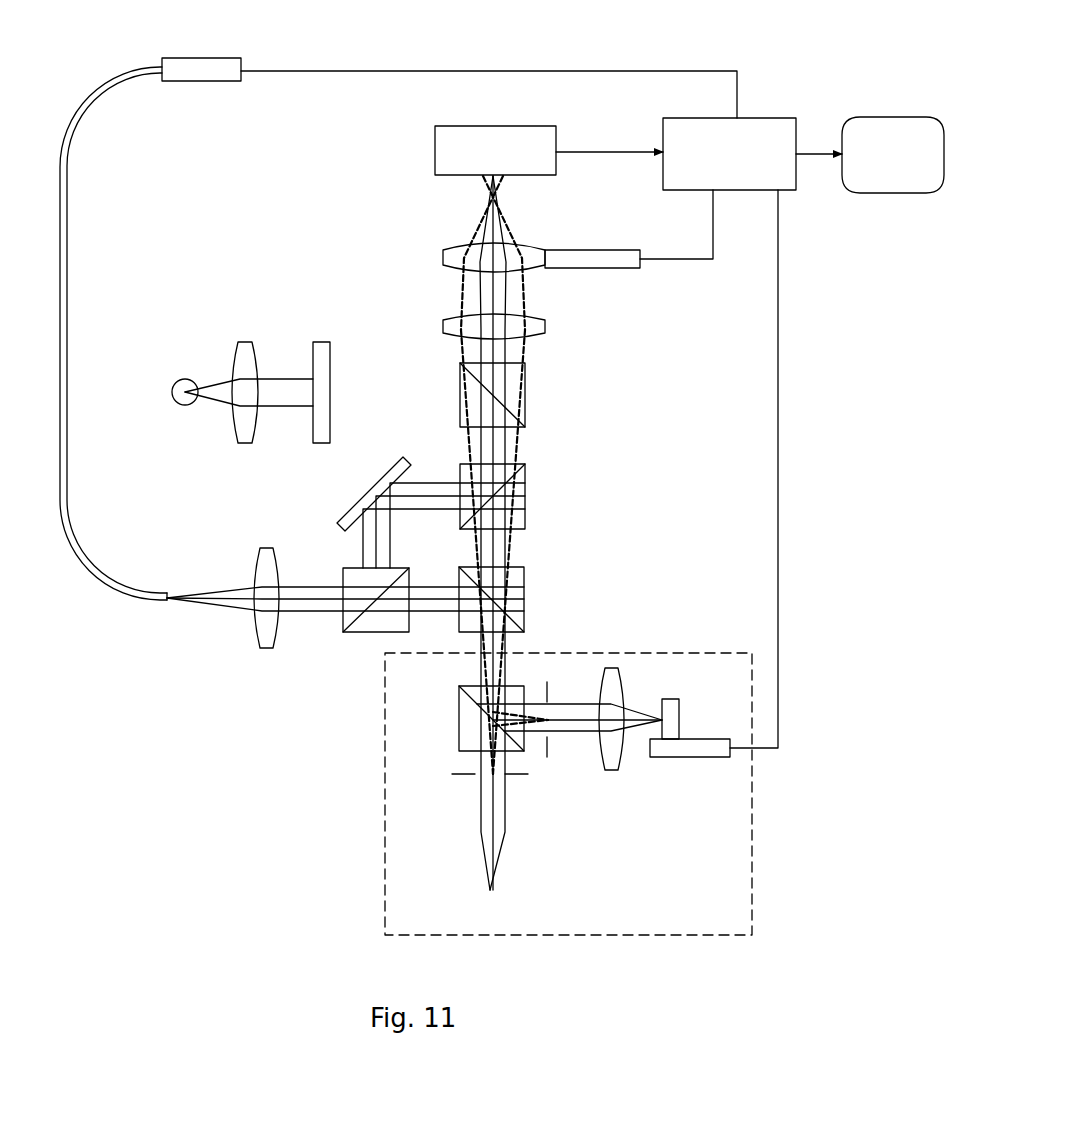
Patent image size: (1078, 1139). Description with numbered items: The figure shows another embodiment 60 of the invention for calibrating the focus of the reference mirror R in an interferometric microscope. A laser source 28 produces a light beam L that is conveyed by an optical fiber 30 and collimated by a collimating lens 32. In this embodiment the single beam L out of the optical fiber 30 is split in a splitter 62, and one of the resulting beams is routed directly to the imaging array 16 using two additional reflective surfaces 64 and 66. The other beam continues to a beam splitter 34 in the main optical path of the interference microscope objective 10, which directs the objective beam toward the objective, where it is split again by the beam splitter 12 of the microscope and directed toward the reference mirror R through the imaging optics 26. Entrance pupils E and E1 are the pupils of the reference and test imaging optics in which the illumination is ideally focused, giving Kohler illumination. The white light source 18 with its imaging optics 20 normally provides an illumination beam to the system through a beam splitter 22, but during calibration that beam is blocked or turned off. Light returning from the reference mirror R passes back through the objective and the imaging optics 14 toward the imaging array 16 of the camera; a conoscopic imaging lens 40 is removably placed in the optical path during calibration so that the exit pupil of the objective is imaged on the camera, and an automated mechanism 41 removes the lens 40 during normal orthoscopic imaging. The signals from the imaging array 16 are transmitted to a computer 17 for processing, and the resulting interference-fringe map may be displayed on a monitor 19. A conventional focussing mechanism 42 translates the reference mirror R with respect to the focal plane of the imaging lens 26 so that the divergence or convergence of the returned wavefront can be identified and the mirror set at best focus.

The interference microscope objective 10 is at (752, 860).
The beam splitter 12 is at (462, 723).
The imaging optics 14 is at (535, 323).
The imaging array 16 is at (505, 140).
The computer 17 is at (762, 122).
The white light source 18 is at (184, 392).
The monitor 19 is at (884, 122).
The imaging optics 20 is at (245, 355).
The beam splitter 22 is at (535, 395).
The imaging optics 26 is at (614, 767).
The laser source 28 is at (197, 64).
The optical fiber 30 is at (66, 322).
The collimating lens 32 is at (260, 645).
The beam splitter 34 is at (520, 600).
The conoscopic imaging lens 40 is at (525, 250).
The automated mechanism 41 is at (595, 251).
The focussing mechanism 42 is at (713, 753).
The embodiment 60 is at (287, 258).
The splitter 62 is at (367, 630).
The reflective surface 64 is at (367, 496).
The reflective surface 66 is at (520, 497).
The light beam L is at (203, 598).
The entrance pupil E is at (548, 692).
The entrance pupil E1 is at (518, 775).
The reference mirror R is at (663, 713).